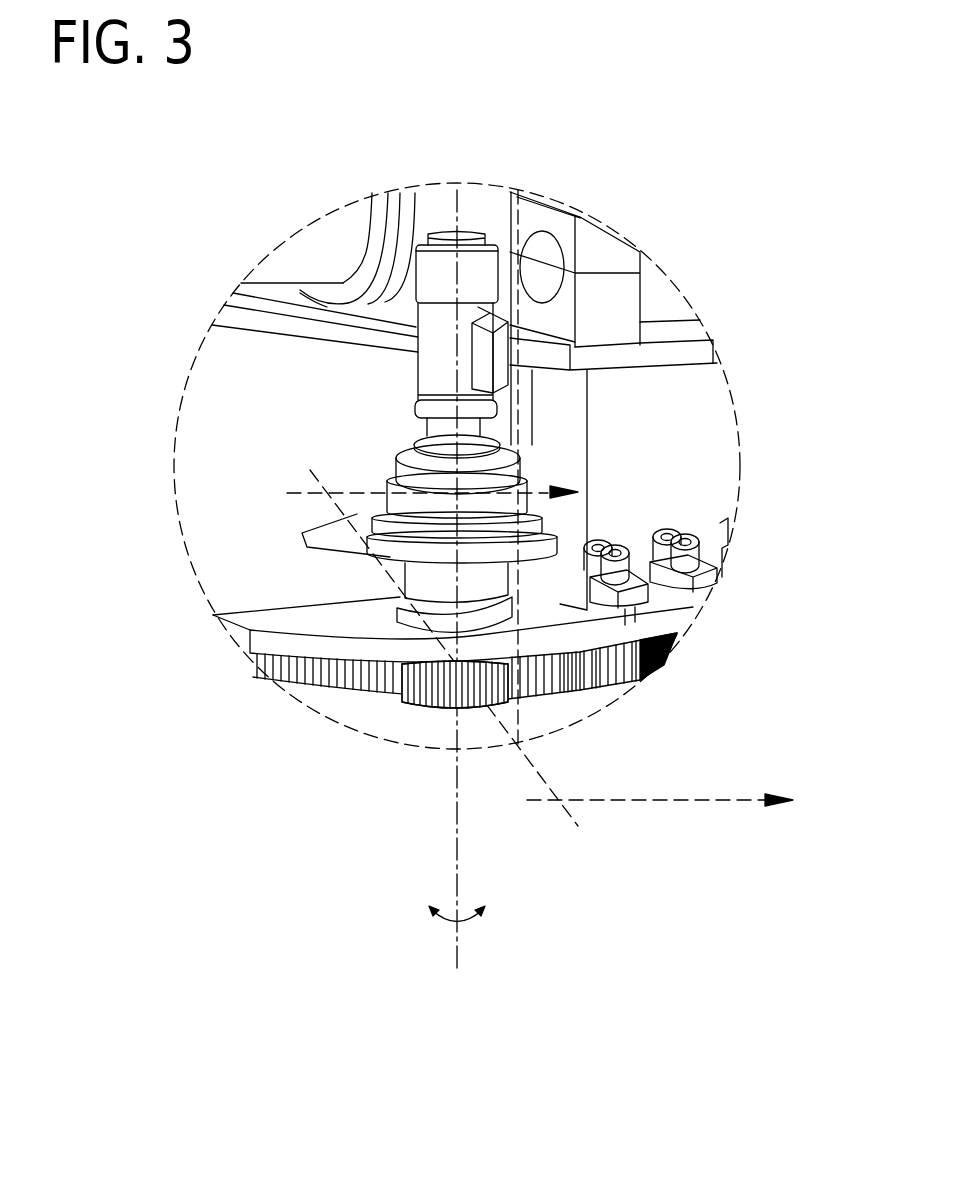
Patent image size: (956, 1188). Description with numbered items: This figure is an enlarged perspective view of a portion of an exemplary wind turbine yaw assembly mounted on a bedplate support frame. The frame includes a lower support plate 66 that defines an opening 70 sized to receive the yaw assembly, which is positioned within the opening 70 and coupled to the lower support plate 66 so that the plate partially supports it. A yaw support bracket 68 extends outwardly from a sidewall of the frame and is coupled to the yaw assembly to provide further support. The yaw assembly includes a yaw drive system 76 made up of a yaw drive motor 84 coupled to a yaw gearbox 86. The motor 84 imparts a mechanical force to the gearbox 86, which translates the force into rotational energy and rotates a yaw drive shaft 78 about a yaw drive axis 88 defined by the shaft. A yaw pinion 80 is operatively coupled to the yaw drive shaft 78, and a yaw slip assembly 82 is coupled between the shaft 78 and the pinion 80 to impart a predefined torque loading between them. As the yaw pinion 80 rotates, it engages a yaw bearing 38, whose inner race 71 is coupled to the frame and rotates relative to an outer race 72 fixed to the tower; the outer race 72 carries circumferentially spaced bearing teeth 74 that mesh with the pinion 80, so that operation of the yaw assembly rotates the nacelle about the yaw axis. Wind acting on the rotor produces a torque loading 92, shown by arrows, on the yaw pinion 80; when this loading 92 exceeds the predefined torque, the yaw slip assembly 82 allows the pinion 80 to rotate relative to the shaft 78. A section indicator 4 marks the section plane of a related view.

The section line 4- 4 is at (540, 650).
The yaw bearing 38 is at (632, 683).
The lower support plate 66 is at (280, 643).
The yaw support bracket 68 is at (548, 530).
The opening 70 is at (478, 727).
The inner race 71 is at (605, 705).
The outer race 72 is at (667, 652).
The bearing teeth 74 is at (568, 690).
The yaw drive system 76 is at (390, 366).
The yaw drive shaft 78 is at (430, 582).
The yaw pinion 80 is at (420, 706).
The yaw slip assembly 82 is at (441, 732).
The yaw drive motor 84 is at (415, 382).
The yaw gearbox 86 is at (392, 487).
The yaw drive axis 88 is at (469, 185).
The torque loading 92 is at (443, 922).